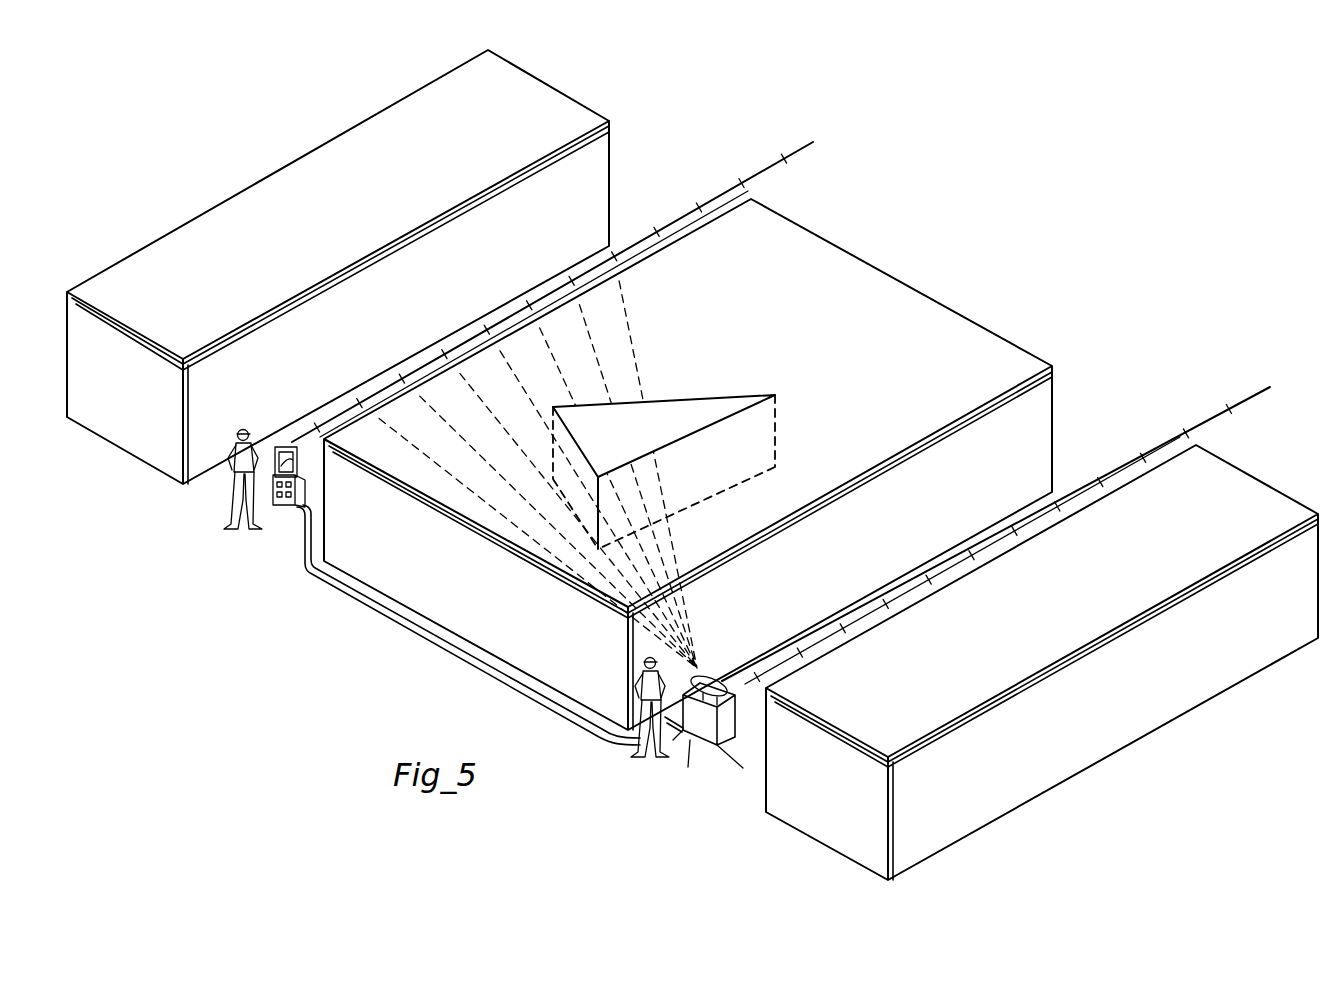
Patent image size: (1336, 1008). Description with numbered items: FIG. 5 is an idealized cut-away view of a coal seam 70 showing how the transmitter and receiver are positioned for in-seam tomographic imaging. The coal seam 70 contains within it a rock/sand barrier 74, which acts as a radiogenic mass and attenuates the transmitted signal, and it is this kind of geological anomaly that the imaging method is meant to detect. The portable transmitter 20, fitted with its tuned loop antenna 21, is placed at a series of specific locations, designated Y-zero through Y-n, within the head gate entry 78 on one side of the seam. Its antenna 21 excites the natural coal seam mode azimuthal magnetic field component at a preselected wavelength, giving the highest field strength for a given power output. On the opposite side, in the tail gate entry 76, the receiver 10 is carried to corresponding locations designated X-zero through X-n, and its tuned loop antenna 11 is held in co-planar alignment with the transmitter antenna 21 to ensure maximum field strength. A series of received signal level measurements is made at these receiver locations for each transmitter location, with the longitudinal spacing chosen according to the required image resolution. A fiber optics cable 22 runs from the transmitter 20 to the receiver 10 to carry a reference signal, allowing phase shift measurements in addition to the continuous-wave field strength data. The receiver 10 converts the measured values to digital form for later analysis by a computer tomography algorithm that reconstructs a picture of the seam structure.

The receiver 10 is at (290, 488).
The tuned loop antenna 11 is at (295, 452).
The transmitter 20 is at (708, 726).
The tuned loop antenna 21 is at (711, 677).
The fiber optics cable 22 is at (443, 648).
The coal seam 70 is at (330, 222).
The rock/sand barrier 74 is at (662, 430).
The tail gate entry 76 is at (614, 251).
The head gate entry 78 is at (1061, 498).